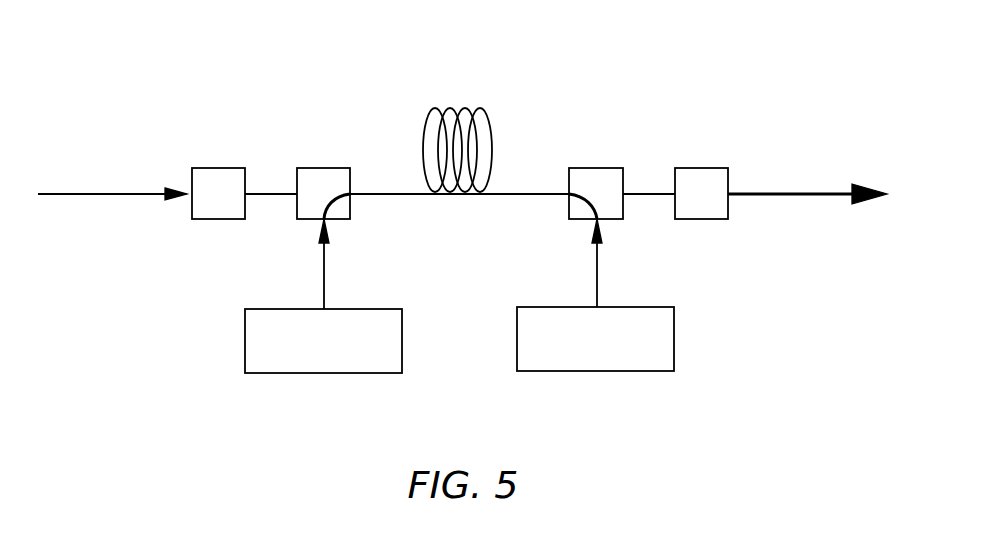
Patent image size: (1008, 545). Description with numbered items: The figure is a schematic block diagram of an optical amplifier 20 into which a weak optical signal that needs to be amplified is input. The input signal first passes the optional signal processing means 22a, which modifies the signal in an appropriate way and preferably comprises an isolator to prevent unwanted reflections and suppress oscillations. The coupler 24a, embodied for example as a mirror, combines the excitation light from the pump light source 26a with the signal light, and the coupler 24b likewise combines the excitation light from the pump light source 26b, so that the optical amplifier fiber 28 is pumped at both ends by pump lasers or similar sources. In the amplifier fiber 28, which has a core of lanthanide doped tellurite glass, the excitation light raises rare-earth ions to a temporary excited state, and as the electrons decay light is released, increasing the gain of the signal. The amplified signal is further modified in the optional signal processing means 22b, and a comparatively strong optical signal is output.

The optical amplifier 20 is at (682, 56).
The signal processing means 22a is at (214, 219).
The signal processing means 22b is at (710, 219).
The coupler 24a is at (317, 168).
The coupler 24b is at (608, 168).
The pump light source 26a is at (245, 338).
The pump light source 26b is at (674, 337).
The optical amplifier fiber 28 is at (492, 138).